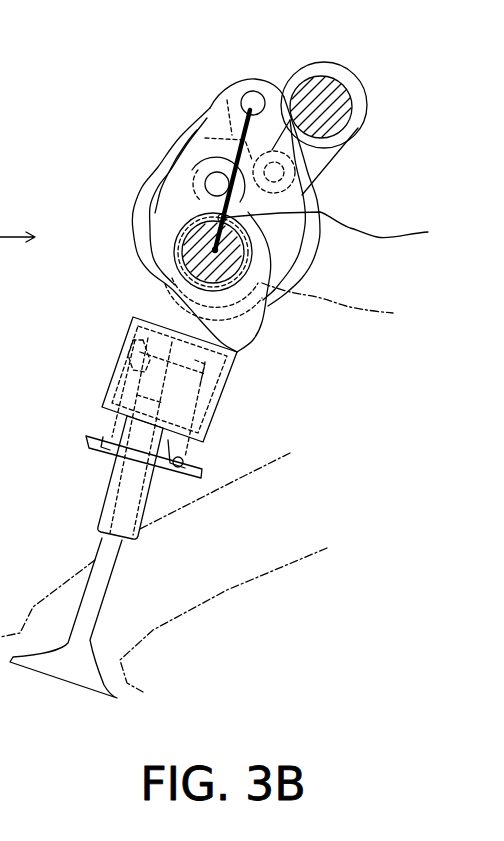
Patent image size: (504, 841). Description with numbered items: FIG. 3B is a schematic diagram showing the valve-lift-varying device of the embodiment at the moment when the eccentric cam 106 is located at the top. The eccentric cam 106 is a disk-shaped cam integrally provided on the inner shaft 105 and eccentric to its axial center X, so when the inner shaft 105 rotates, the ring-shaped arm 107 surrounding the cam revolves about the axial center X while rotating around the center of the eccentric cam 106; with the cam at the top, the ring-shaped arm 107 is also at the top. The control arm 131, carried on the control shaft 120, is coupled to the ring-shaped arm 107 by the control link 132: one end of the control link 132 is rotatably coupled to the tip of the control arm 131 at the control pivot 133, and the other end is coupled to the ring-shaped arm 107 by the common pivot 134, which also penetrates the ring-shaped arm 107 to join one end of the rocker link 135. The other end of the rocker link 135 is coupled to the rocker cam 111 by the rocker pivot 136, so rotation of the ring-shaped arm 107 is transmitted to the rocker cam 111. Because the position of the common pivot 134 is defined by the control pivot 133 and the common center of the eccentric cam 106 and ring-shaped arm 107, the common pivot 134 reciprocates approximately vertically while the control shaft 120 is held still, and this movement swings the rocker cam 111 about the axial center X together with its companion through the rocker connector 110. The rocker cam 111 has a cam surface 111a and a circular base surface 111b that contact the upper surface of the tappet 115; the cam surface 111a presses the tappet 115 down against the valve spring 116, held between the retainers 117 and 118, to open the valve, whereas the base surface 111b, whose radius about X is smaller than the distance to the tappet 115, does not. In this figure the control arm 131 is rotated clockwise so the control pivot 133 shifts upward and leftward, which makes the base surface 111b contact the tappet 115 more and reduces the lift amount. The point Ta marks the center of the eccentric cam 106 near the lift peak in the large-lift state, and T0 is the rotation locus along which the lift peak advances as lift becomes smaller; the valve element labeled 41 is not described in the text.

The valve 41 is at (57, 672).
The inner shaft 105 is at (170, 262).
The eccentric cam 106 is at (157, 211).
The ring-shaped arm 107 is at (148, 168).
The rocker connector 110 is at (252, 217).
The rocker cam 111 is at (268, 316).
The cam surface 111a is at (255, 338).
The base surface 111b is at (310, 270).
The tappet 115 is at (228, 372).
The valve spring 116 is at (203, 463).
The retainer 117 is at (120, 364).
The retainer 118 is at (92, 447).
The control shaft 120 is at (334, 82).
The control arm 131 is at (310, 62).
The control link 132 is at (320, 147).
The control pivot 133 is at (322, 211).
The common pivot 134 is at (249, 88).
The rocker link 135 is at (208, 124).
The rocker pivot 136 is at (195, 146).
The axial center X is at (170, 250).
The point Ta is at (338, 227).
The rotation locus T0 is at (346, 304).